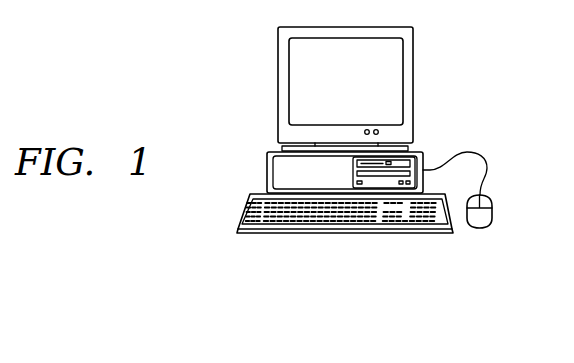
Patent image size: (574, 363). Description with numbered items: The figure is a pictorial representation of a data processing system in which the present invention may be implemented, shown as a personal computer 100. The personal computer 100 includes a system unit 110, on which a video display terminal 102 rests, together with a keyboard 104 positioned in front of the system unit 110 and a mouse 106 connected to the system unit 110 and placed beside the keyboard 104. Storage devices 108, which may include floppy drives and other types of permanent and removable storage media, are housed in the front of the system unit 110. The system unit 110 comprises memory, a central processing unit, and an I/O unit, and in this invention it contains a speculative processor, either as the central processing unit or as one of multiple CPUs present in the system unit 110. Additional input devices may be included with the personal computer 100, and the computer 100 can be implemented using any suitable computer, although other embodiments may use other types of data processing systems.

The personal computer 100 is at (127, 95).
The video display terminal 102 is at (292, 78).
The keyboard 104 is at (263, 217).
The mouse 106 is at (480, 227).
The storage devices 108 is at (422, 152).
The system unit 110 is at (268, 172).